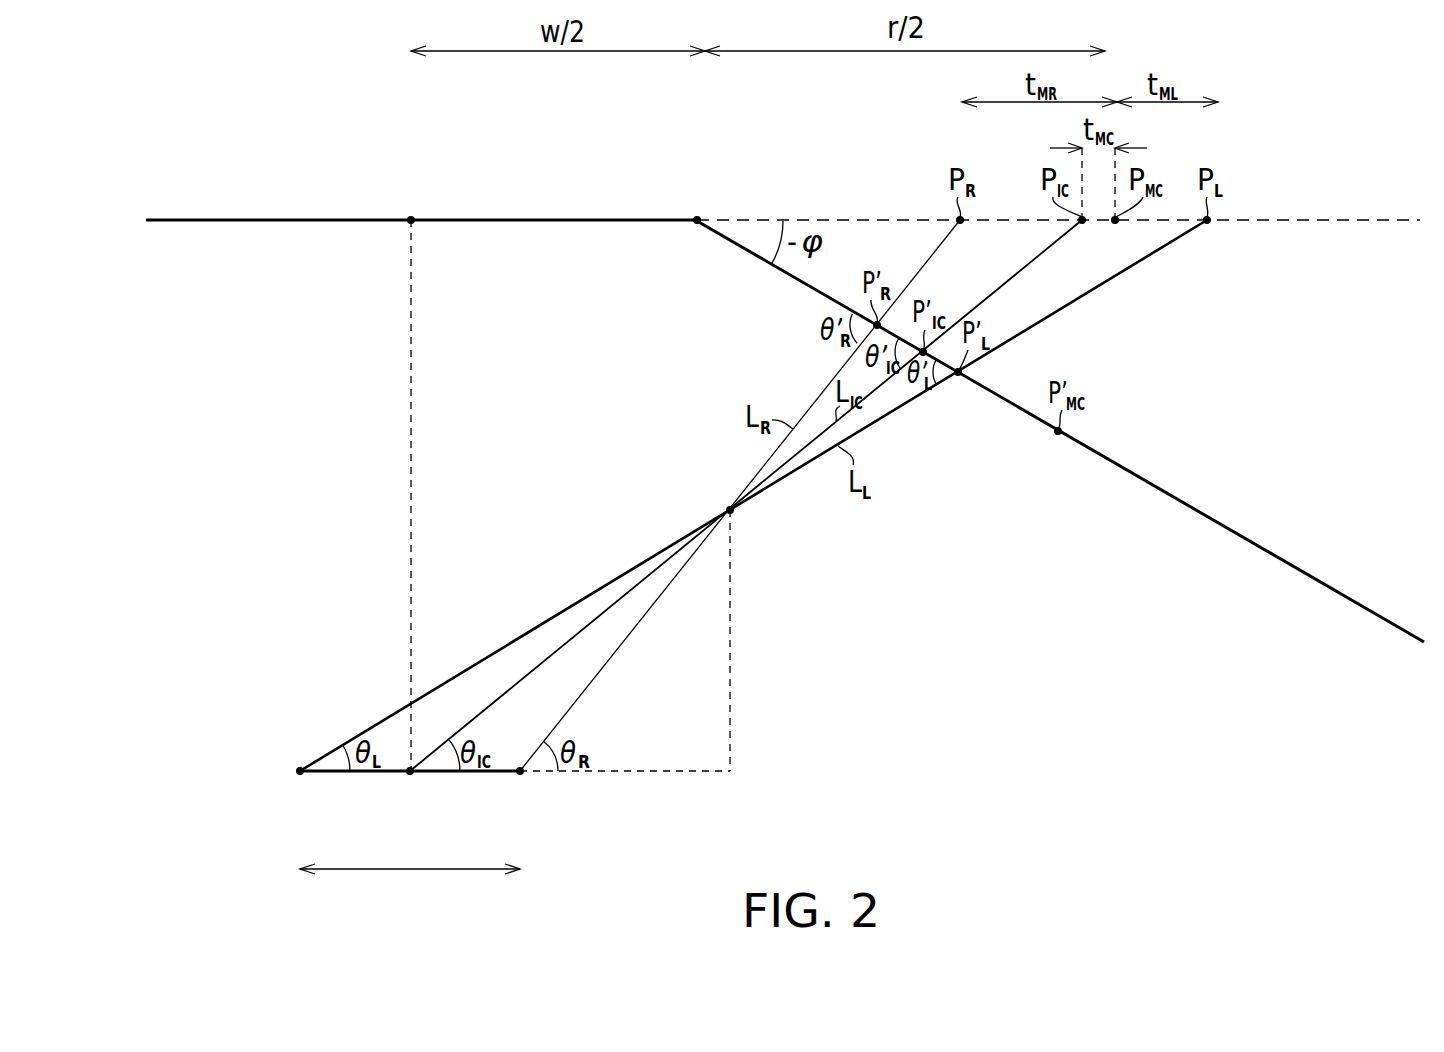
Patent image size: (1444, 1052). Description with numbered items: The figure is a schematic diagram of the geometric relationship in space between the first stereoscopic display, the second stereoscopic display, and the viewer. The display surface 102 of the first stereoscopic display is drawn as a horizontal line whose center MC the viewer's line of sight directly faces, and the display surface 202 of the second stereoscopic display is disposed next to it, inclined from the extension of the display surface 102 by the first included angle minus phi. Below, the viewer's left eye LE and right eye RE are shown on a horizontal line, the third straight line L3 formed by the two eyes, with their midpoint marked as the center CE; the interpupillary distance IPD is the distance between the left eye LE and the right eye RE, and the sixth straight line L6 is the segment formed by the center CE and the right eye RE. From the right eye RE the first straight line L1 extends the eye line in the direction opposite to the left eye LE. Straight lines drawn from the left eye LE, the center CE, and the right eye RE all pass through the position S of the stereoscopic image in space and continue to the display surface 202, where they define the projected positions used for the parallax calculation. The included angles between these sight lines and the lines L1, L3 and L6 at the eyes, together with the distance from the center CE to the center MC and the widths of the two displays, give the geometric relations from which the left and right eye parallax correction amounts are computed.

The display surface 102 is at (223, 218).
The display surface 202 is at (747, 251).
The center of the display surface of the first stereoscopic display MC is at (411, 217).
The position of a stereoscopic image in space S is at (725, 506).
The first straight line L1 is at (653, 775).
The third straight line L3 is at (367, 775).
The sixth straight line L6 is at (490, 775).
The left eye LE is at (300, 775).
The center of the left eye and the right eye CE is at (410, 775).
The right eye RE is at (520, 775).
The interpupillary distance IPD is at (410, 884).